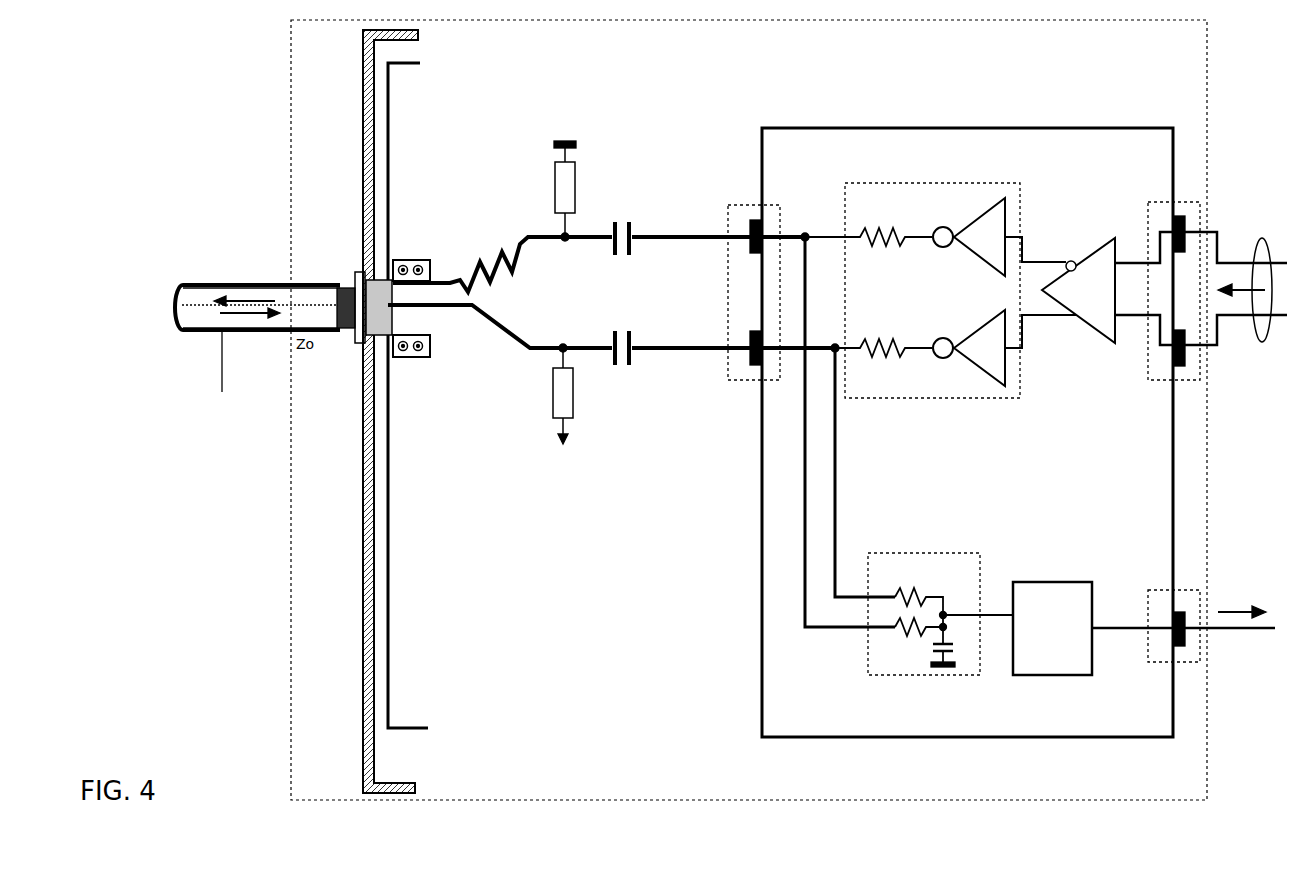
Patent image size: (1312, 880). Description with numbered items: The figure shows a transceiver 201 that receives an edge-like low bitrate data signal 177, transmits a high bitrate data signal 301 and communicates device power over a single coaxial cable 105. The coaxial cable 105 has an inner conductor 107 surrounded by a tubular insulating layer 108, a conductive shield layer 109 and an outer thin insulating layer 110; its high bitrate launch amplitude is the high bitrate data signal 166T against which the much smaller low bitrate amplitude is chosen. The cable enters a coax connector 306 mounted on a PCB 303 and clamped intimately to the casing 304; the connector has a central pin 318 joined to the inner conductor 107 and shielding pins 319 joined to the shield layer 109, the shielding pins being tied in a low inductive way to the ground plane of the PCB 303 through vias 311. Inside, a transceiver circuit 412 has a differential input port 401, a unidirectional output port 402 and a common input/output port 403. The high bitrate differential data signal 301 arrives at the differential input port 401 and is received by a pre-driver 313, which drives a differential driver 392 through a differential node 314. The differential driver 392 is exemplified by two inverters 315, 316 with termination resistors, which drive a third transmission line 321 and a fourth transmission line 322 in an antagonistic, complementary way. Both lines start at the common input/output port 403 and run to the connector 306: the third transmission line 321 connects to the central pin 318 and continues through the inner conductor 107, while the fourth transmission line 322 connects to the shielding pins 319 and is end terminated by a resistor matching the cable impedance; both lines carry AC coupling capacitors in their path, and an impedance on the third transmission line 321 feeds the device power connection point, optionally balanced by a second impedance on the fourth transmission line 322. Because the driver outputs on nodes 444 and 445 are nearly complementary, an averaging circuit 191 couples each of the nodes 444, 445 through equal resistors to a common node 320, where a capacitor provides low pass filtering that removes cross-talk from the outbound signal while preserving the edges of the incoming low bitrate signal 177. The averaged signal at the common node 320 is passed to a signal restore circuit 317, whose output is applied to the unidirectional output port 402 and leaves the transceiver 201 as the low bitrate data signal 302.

The transceiver 201 is at (290, 638).
The casing 304 is at (363, 130).
The PCB 303 is at (390, 130).
The tubular insulating layer 108 is at (200, 288).
The inner conductor 107 is at (282, 318).
The high bitrate data signal 166T is at (262, 300).
The conductive shield layer 109 is at (198, 332).
The low bitrate data signal 177 is at (240, 332).
The thin insulating layer 110 is at (222, 370).
The coaxial cable 105 is at (303, 272).
The coax connector 306 is at (362, 355).
The vias 311 is at (405, 258).
The shielding pins 319 is at (420, 334).
The central pin 318 is at (396, 300).
The fourth transmission line 322 is at (682, 243).
The third transmission line 321 is at (685, 353).
The common input/output port 403 is at (724, 210).
The transceiver circuit 412 is at (760, 665).
The node 444 is at (808, 632).
The node 445 is at (840, 470).
The differential driver 392 is at (912, 286).
The inverter 316 is at (1000, 200).
The inverter 315 is at (1000, 388).
The differential node 314 is at (1010, 290).
The pre-driver 313 is at (1085, 246).
The differential input port 401 is at (1150, 380).
The high bitrate differential data signal 301 is at (1262, 242).
The averaging circuit 191 is at (930, 676).
The common node 320 is at (1000, 613).
The signal restore circuit 317 is at (1048, 676).
The unidirectional output port 402 is at (1146, 591).
The low bitrate data signal 302 is at (1240, 610).